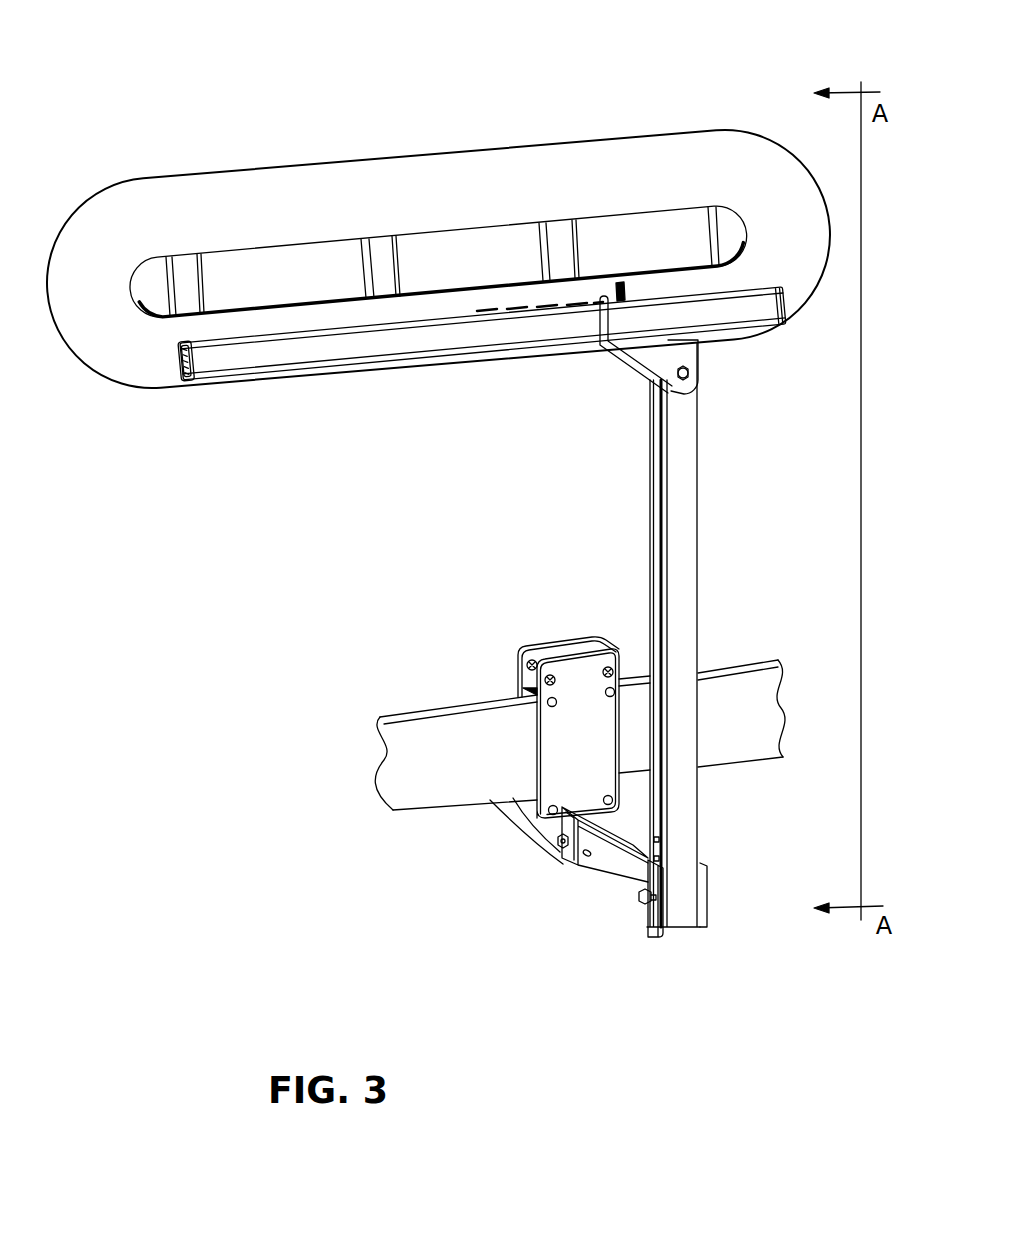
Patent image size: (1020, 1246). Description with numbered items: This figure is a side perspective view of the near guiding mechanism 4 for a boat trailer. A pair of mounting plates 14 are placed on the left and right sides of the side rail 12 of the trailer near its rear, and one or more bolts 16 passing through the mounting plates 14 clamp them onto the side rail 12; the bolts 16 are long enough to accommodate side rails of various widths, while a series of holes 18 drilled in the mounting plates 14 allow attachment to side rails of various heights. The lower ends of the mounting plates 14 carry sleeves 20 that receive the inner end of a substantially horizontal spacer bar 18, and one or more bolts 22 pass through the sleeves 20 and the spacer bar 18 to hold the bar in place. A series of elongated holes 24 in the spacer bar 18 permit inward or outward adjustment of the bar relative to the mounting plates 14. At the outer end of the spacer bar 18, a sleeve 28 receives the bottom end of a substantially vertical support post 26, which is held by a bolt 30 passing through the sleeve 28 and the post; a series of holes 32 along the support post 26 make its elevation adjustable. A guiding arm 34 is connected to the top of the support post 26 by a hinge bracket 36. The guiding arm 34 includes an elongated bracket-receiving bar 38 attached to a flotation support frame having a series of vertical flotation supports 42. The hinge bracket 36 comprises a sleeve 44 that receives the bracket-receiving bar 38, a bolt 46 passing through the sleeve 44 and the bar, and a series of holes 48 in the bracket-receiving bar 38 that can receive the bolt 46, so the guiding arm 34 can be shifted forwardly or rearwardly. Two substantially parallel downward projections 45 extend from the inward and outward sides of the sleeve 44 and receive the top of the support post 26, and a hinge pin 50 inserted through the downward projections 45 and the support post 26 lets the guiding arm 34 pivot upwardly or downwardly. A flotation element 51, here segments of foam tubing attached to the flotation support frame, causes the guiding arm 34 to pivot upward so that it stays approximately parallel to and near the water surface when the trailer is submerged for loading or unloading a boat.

The guiding mechanism 4 is at (337, 115).
The side rail 12 is at (420, 812).
The mounting plates 14 is at (580, 635).
The bolts 16 is at (610, 797).
The spacer bar 18 is at (608, 667).
The sleeves 20 is at (565, 825).
The bolts 22 is at (540, 848).
The elongated holes 24 is at (583, 863).
The support post 26 is at (683, 520).
The sleeve 28 is at (652, 925).
The bolt 30 is at (640, 898).
The holes 32 is at (647, 843).
The guiding arm 34 is at (194, 415).
The hinge bracket 36 is at (612, 373).
The bracket-receiving bar 38 is at (297, 360).
The vertical flotation supports 42 is at (418, 262).
The sleeve 44 is at (687, 318).
The downward projections 45 is at (690, 354).
The bolt 46 is at (624, 284).
The holes 48 is at (487, 310).
The hinge pin 50 is at (686, 378).
The flotation element 51 is at (120, 367).